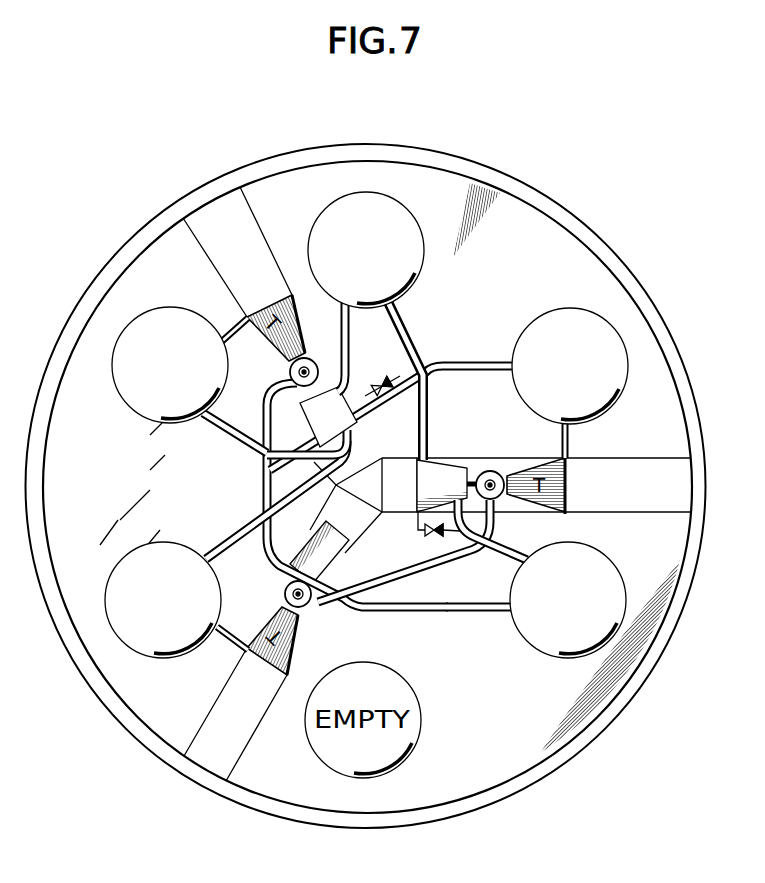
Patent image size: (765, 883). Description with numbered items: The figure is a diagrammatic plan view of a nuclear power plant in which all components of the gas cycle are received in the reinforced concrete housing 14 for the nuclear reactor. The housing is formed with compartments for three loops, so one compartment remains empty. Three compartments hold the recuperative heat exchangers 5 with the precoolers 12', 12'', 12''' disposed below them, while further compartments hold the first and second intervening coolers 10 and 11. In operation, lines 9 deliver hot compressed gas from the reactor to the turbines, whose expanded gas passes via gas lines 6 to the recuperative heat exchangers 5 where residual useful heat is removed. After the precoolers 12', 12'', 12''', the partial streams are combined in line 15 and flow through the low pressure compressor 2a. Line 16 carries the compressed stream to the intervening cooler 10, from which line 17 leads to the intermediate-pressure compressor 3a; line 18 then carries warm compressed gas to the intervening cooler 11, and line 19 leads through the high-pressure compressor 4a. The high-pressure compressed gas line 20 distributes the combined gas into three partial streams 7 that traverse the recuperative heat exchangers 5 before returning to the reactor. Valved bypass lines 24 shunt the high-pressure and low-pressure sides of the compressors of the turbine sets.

The reinforced concrete housing 14 is at (531, 225).
The intervening cooler 10 is at (406, 250).
The intervening cooler 11 is at (550, 639).
The recuperative heat exchanger 5 is at (162, 328).
The gas line 6 is at (230, 332).
The partial stream 7 is at (300, 392).
The line 9 is at (292, 372).
The line 15 is at (452, 362).
The line 16 is at (338, 327).
The line 17 is at (420, 343).
The line 18 is at (503, 545).
The line 19 is at (480, 611).
The high-pressure compressed gas line 20 is at (263, 481).
The valved bypass line 24 is at (378, 376).
The low pressure compressor 2a is at (366, 423).
The intermediate-pressure compressor 3a is at (418, 500).
The high-pressure compressor 4a is at (343, 535).
The precooler 12' is at (121, 410).
The precooler 12'' is at (152, 673).
The precooler 12''' is at (637, 399).